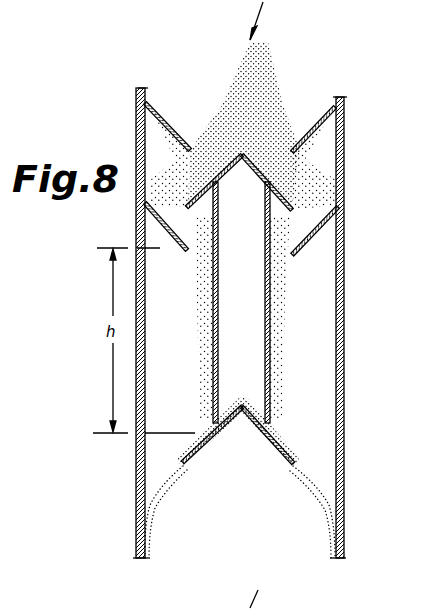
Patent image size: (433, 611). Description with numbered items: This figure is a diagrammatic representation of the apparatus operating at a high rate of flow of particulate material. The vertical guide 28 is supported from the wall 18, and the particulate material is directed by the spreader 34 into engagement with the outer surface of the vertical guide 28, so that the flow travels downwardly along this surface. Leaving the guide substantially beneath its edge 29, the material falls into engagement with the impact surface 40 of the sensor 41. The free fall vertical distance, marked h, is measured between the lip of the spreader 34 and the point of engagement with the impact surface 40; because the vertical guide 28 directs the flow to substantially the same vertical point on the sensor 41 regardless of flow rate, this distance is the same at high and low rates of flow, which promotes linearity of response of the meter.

The wall 18 is at (343, 297).
The spreader 34 is at (313, 235).
The vertical guide 28 is at (272, 395).
The edge 29 is at (273, 427).
The impact surface 40 is at (197, 444).
The sensor 41 is at (253, 372).